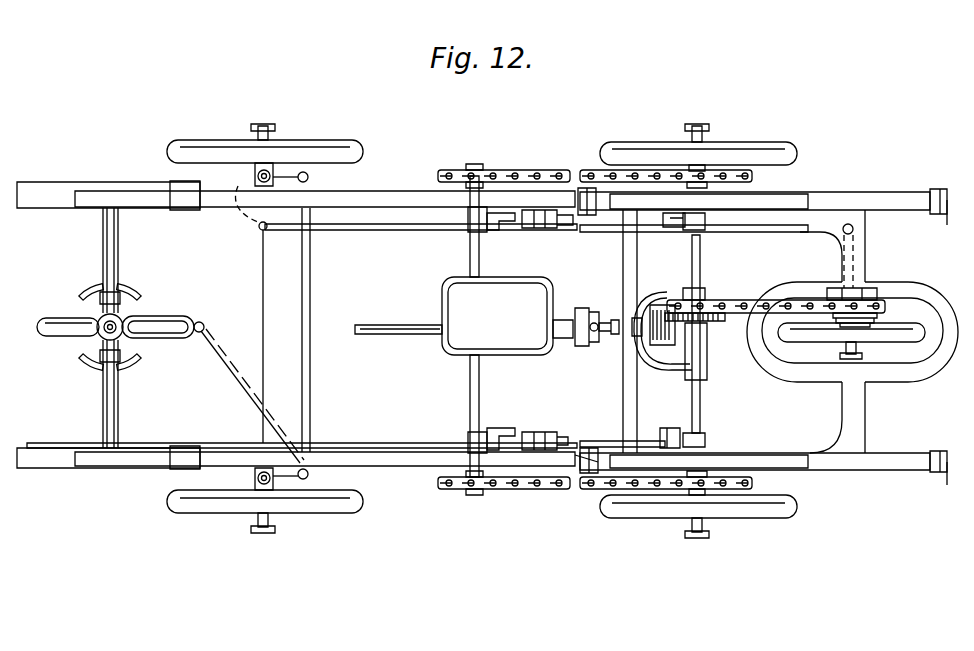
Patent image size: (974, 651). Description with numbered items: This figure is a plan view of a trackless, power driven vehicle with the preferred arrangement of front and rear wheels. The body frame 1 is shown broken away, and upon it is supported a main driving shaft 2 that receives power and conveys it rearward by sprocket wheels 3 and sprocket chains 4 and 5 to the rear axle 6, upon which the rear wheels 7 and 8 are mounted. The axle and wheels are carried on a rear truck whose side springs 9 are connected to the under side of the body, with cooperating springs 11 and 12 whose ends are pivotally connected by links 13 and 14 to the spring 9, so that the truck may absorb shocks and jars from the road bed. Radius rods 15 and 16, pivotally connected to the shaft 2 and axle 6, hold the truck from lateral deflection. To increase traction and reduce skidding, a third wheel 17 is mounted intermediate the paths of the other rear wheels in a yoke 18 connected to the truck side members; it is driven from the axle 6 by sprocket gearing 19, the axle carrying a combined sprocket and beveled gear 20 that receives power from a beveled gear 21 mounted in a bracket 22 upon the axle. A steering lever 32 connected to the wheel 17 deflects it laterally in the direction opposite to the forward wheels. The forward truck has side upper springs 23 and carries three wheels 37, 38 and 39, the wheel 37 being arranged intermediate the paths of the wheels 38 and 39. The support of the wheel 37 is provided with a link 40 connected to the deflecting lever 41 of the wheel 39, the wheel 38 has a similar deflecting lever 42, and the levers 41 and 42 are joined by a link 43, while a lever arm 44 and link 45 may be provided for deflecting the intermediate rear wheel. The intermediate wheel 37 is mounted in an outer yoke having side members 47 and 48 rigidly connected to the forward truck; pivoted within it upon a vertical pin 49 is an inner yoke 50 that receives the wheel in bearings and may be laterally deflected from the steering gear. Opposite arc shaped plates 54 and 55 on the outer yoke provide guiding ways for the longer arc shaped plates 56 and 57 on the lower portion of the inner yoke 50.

The body frame 1 is at (118, 200).
The main driving shaft 2 is at (470, 250).
The sprocket wheels 3 is at (472, 168).
The sprocket chain 4 is at (530, 490).
The sprocket chain 5 is at (551, 170).
The rear axle 6 is at (700, 262).
The rear wheel 7 is at (790, 152).
The rear wheel 8 is at (792, 512).
The side spring 9 is at (884, 194).
The spring 11 is at (949, 355).
The spring 12 is at (585, 468).
The link 13 is at (935, 189).
The link 14 is at (580, 192).
The radius rod 15 is at (612, 232).
The radius rod 16 is at (600, 441).
The third wheel 17 is at (912, 335).
The yoke 18 is at (866, 386).
The sprocket gearing 19 is at (755, 300).
The combined sprocket and beveled gear 20 is at (722, 322).
The beveled gear 21 is at (662, 356).
The bracket 22 is at (686, 366).
The side upper spring 23 is at (52, 208).
The steering lever 32 is at (858, 248).
The wheel 37 is at (165, 316).
The wheel 38 is at (360, 148).
The wheel 39 is at (335, 515).
The link 40 is at (240, 392).
The deflecting lever 41 is at (310, 476).
The deflecting lever 42 is at (310, 177).
The link 43 is at (311, 310).
The lever arm 44 is at (250, 222).
The link 45 is at (375, 232).
The side member 47 is at (115, 248).
The side member 48 is at (115, 408).
The vertical pin 49 is at (78, 333).
The inner yoke 50 is at (100, 298).
The arc shaped plate 54 is at (84, 292).
The arc shaped plate 55 is at (100, 370).
The arc shaped plate 56 is at (128, 290).
The arc shaped plate 57 is at (82, 362).